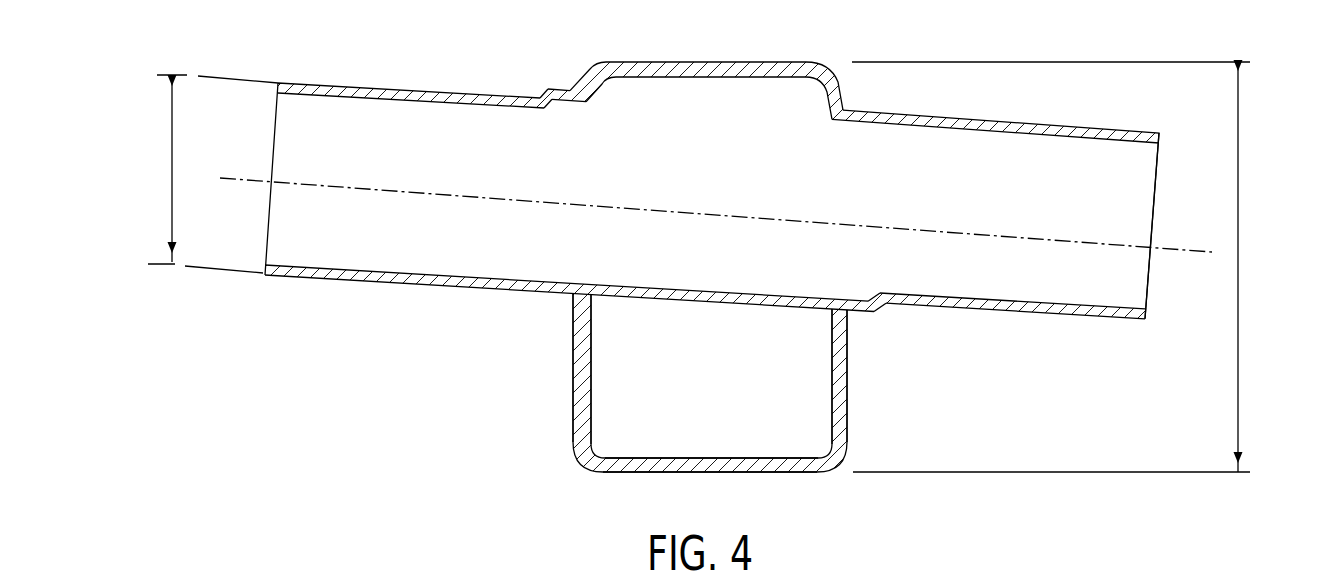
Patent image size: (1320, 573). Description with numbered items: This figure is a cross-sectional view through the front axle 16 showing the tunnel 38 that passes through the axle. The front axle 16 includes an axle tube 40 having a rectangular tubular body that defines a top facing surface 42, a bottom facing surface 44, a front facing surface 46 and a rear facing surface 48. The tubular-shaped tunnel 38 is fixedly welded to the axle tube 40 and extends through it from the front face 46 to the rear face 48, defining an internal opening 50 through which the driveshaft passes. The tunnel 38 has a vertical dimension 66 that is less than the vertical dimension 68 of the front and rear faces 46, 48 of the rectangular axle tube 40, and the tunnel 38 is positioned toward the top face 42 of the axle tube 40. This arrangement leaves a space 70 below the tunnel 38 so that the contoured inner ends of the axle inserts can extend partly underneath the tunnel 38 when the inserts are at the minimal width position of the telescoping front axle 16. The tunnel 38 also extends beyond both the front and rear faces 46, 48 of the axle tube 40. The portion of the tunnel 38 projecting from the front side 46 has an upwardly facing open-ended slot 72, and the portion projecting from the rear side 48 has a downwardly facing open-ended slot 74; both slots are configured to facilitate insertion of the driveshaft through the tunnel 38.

The front axle 16 is at (850, 405).
The tunnel 38 is at (1013, 121).
The axle tube 40 is at (846, 86).
The top facing surface 42 is at (717, 62).
The bottom facing surface 44 is at (713, 473).
The front facing surface 46 is at (573, 348).
The rear facing surface 48 is at (848, 378).
The internal opening 50 is at (1162, 225).
The vertical dimension 66 is at (170, 168).
The vertical dimension 68 is at (1240, 265).
The space 70 is at (682, 412).
The upwardly facing open-ended slot 72 is at (407, 91).
The downwardly facing open-ended slot 74 is at (1015, 314).